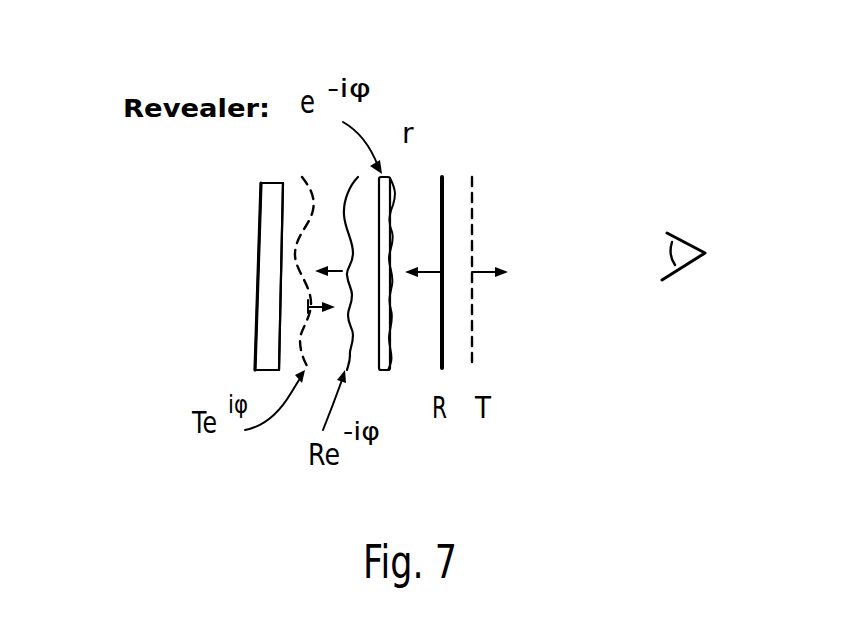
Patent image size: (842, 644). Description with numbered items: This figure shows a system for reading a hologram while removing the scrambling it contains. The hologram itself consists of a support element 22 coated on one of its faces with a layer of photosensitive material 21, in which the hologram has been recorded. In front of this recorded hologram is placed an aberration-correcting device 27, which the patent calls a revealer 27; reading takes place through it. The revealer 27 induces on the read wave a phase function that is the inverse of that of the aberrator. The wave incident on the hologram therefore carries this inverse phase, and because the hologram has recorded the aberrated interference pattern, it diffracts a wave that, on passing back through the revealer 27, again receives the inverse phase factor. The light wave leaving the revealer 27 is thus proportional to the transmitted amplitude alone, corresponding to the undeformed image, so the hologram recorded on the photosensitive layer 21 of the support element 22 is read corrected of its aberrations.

The layer of photosensitive material 21 is at (258, 243).
The support element 22 is at (274, 191).
The aberration-correcting device (revealer) 27 is at (397, 183).